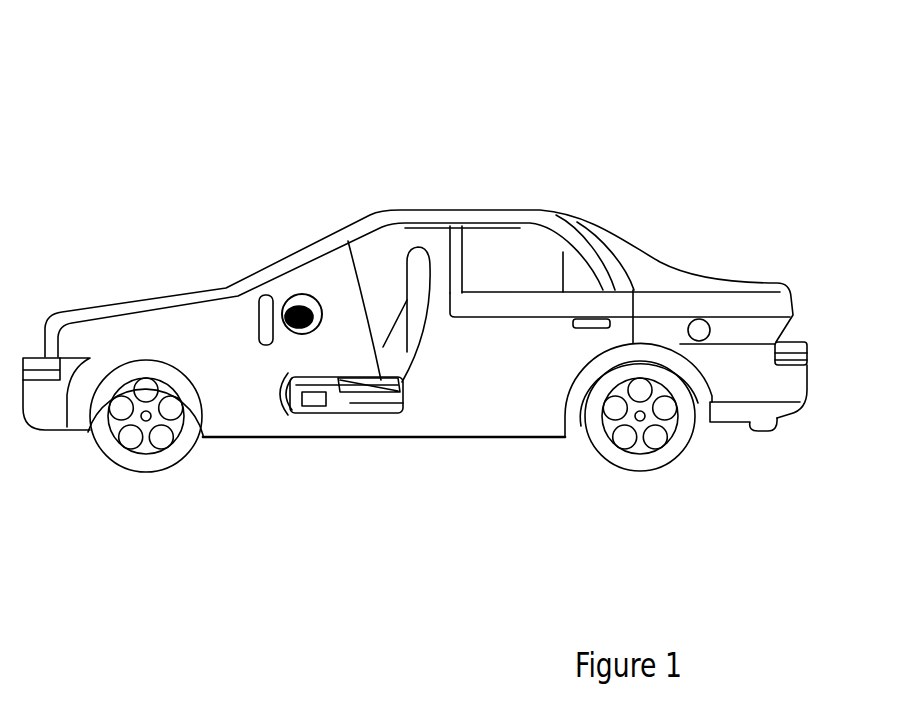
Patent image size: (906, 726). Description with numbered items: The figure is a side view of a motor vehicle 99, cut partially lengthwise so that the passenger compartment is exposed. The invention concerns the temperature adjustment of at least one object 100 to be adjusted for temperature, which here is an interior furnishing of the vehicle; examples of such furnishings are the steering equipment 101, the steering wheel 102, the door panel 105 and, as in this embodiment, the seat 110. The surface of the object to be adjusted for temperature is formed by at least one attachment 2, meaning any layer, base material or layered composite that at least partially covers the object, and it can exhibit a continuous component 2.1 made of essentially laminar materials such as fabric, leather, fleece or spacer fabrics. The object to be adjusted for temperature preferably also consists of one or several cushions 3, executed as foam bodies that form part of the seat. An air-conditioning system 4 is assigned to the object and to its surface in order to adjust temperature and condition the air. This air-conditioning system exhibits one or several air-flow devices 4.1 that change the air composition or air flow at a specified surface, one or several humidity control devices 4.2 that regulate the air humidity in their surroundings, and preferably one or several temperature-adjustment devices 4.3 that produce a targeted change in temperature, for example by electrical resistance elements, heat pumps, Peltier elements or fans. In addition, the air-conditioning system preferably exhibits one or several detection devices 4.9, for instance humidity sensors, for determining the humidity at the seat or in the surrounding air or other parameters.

The motor vehicle 99 is at (677, 250).
The object to be adjusted for temperature 100 is at (301, 191).
The steering equipment 101 is at (268, 295).
The steering wheel 102 is at (262, 293).
The door panel 105 is at (538, 302).
The seat 110 is at (401, 250).
The attachment 2 is at (383, 280).
The continuous component 2.1 is at (333, 376).
The cushion 3 is at (402, 380).
The air-conditioning system 4 is at (350, 484).
The air-flow device 4.1 is at (304, 406).
The humidity control device 4.2 is at (345, 459).
The temperature-adjustment device 4.3 is at (396, 412).
The detection device 4.9 is at (340, 392).